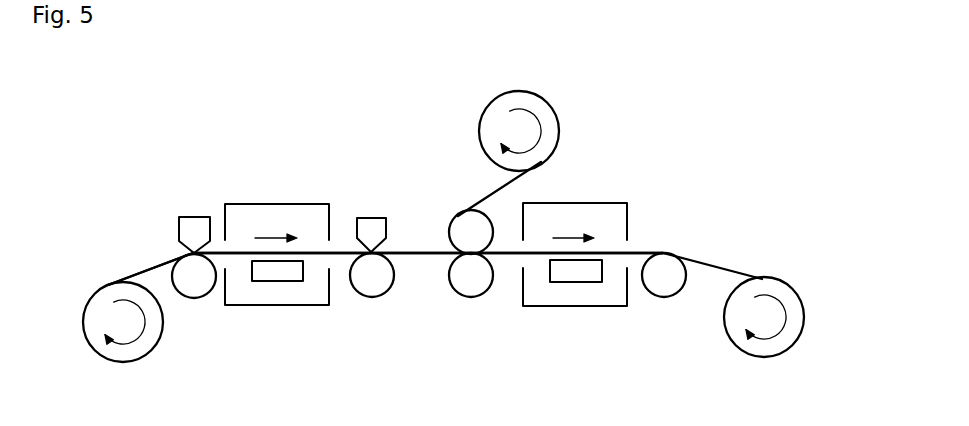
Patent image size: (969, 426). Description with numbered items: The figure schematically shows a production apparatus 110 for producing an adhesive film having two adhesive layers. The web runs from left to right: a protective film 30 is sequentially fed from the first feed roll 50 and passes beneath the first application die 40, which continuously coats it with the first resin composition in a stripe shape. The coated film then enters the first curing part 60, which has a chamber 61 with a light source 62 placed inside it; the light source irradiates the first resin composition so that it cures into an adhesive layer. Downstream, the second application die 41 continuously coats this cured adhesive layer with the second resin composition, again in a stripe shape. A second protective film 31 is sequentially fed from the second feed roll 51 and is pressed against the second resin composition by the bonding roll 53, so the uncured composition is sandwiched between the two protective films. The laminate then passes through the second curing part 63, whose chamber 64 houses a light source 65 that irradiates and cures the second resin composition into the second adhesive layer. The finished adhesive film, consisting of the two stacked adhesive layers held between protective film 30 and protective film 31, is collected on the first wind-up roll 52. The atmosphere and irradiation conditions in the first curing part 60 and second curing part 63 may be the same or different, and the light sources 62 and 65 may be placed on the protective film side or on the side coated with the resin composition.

The production apparatus 110 is at (157, 79).
The protective film 30 is at (138, 272).
The protective film 31 is at (487, 195).
The first application die 40 is at (185, 233).
The second application die 41 is at (368, 223).
The first feed roll 50 is at (95, 307).
The second feed roll 51 is at (495, 108).
The first wind-up roll 52 is at (793, 302).
The bonding roll 53 is at (457, 233).
The first curing part 60 is at (294, 295).
The chamber 61 is at (317, 295).
The light source 62 is at (282, 277).
The second curing part 63 is at (621, 257).
The chamber 64 is at (615, 228).
The light source 65 is at (570, 277).